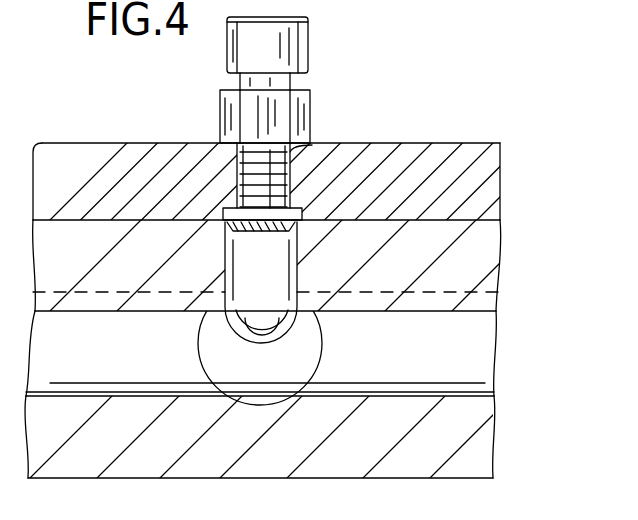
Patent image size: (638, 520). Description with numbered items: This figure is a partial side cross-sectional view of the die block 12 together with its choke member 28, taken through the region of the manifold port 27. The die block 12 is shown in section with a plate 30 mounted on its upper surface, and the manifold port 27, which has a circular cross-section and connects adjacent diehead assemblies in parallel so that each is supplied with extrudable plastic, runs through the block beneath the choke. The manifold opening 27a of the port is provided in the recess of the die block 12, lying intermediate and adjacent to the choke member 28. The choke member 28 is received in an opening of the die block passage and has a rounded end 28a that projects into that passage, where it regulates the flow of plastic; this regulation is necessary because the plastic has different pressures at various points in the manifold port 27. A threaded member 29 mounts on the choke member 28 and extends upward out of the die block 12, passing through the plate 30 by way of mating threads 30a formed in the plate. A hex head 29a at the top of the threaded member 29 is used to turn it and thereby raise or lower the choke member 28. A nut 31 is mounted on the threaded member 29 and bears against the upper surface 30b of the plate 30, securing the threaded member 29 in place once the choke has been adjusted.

The die block 12 is at (494, 250).
The manifold port 27 is at (478, 345).
The manifold opening 27a is at (281, 388).
The choke member 28 is at (278, 298).
The rounded end 28a is at (232, 337).
The threaded member 29 is at (238, 172).
The hex head 29a is at (298, 47).
The plate 30 is at (492, 178).
The mating threads 30a is at (312, 145).
The upper surface 30b is at (434, 142).
The nut 31 is at (230, 107).